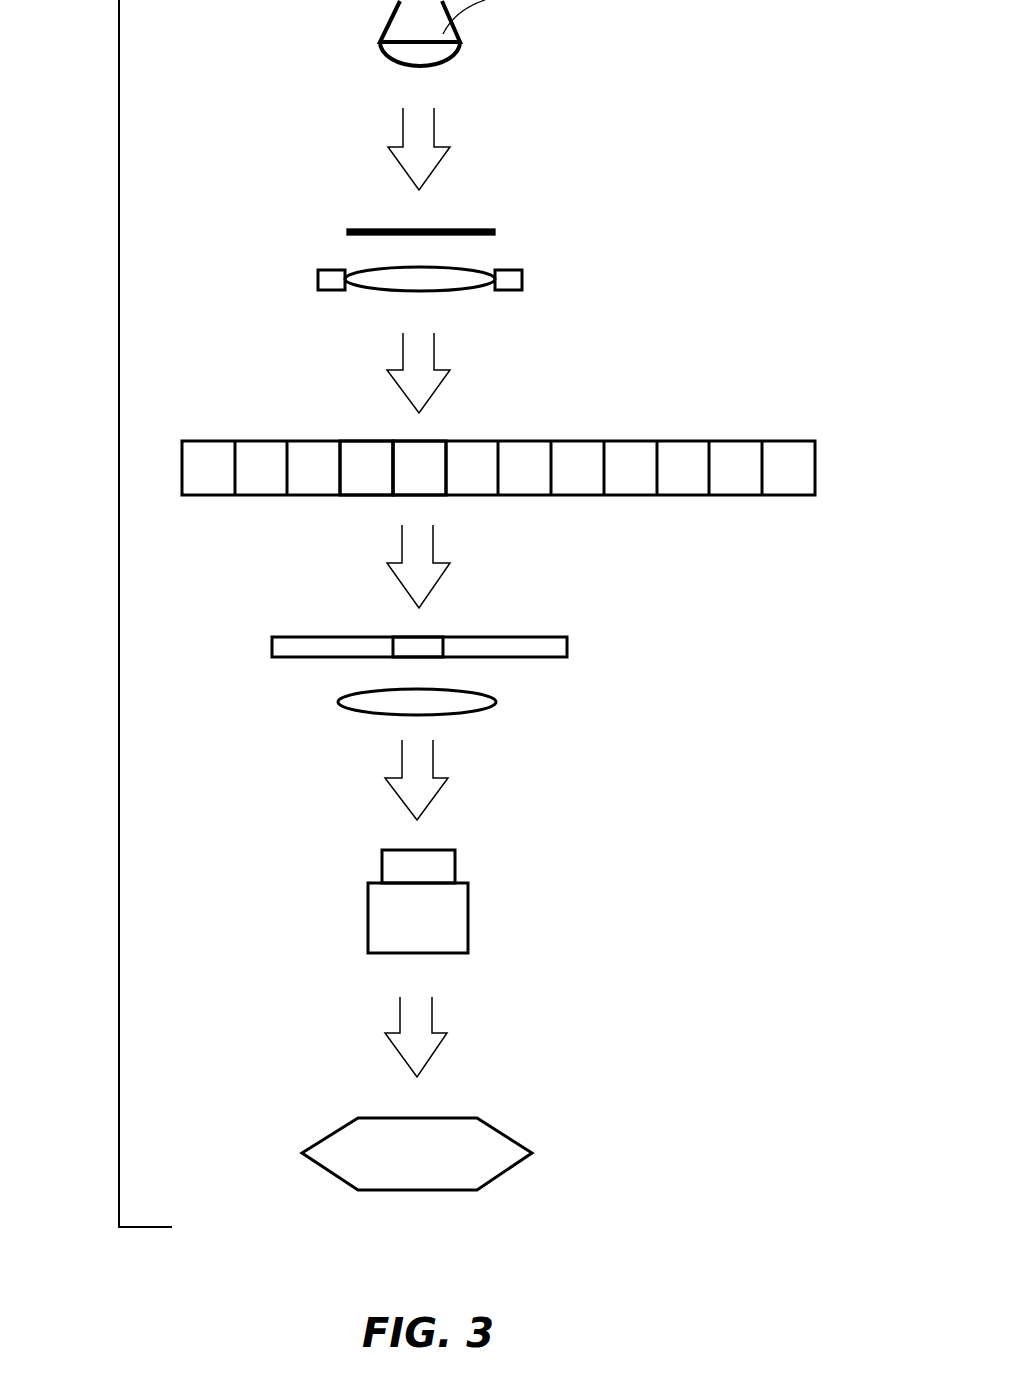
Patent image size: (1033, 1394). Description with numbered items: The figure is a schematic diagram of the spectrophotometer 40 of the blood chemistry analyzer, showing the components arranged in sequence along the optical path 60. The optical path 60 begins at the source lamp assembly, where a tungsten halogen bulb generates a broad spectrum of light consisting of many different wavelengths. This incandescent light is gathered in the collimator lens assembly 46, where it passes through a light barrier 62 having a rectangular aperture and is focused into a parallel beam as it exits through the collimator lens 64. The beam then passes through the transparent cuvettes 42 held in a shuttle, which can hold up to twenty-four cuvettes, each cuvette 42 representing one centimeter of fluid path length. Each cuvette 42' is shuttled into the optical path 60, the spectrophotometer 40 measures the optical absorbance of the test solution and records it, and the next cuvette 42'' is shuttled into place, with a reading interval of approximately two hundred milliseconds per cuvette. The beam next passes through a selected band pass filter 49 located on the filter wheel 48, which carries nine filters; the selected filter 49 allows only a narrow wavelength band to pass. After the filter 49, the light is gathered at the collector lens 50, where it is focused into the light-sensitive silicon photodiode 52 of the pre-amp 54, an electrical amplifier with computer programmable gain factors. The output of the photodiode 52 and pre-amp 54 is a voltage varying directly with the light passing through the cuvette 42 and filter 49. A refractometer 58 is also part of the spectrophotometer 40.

The spectrophotometer 40 is at (119, 588).
The cuvette 42 is at (529, 434).
The cuvette 42' is at (473, 431).
The next cuvette 42'' is at (313, 432).
The collimator lens assembly 46 is at (545, 278).
The filter wheel 48 is at (542, 648).
The filter 49 is at (402, 645).
The collector lens 50 is at (470, 701).
The photodiode 52 is at (440, 866).
The pre-amp 54 is at (448, 940).
The refractometer 58 is at (490, 1150).
The optical path 60 is at (418, 150).
The light barrier 62 is at (465, 226).
The collimator lens 64 is at (363, 278).